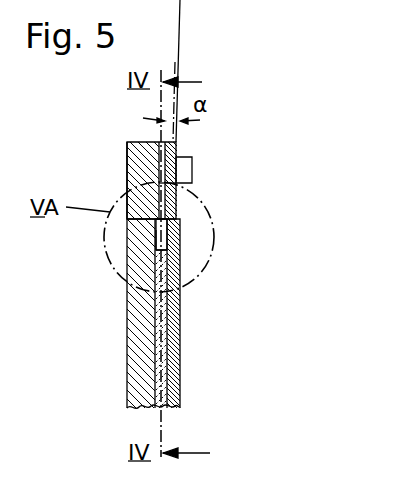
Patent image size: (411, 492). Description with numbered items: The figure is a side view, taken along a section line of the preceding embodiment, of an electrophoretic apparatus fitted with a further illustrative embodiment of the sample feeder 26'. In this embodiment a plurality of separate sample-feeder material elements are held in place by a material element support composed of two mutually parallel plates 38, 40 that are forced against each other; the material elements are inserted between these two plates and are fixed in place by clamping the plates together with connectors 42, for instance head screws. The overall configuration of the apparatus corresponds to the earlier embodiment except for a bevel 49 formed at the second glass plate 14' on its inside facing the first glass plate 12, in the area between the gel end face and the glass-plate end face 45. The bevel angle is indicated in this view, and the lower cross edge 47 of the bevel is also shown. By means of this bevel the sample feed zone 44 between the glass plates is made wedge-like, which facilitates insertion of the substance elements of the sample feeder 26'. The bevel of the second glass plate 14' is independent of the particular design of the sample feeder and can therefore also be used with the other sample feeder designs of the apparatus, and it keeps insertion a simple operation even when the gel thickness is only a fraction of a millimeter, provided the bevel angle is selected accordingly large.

The first glass plate 12 is at (138, 375).
The second glass plate 14' is at (204, 329).
The sample feeder 26' is at (89, 180).
The plate 38 is at (180, 213).
The plate 40 is at (138, 142).
The connector 42 is at (192, 164).
The sample feed zone 44 is at (167, 221).
The glass-plate end face 45 is at (178, 236).
The lower cross edge 47 is at (169, 250).
The bevel 49 is at (157, 246).